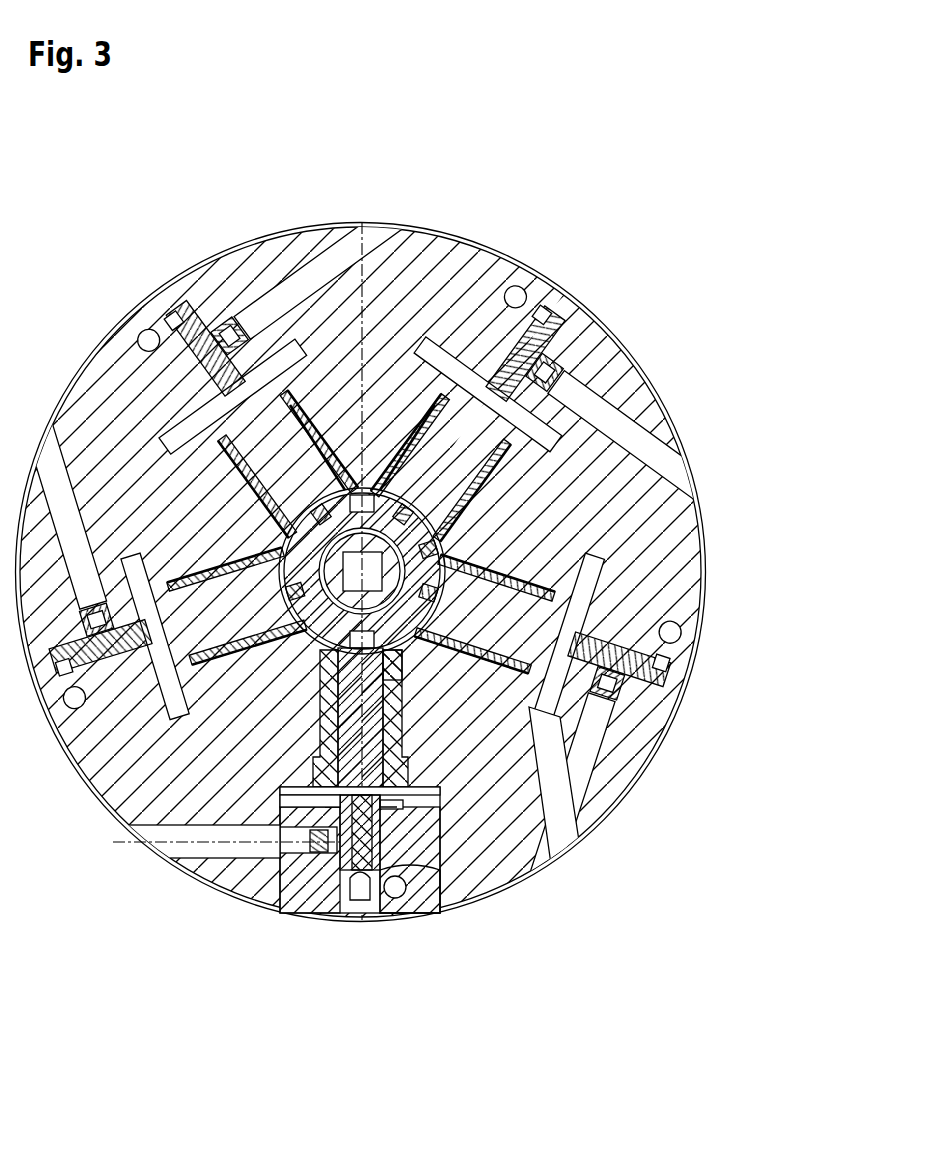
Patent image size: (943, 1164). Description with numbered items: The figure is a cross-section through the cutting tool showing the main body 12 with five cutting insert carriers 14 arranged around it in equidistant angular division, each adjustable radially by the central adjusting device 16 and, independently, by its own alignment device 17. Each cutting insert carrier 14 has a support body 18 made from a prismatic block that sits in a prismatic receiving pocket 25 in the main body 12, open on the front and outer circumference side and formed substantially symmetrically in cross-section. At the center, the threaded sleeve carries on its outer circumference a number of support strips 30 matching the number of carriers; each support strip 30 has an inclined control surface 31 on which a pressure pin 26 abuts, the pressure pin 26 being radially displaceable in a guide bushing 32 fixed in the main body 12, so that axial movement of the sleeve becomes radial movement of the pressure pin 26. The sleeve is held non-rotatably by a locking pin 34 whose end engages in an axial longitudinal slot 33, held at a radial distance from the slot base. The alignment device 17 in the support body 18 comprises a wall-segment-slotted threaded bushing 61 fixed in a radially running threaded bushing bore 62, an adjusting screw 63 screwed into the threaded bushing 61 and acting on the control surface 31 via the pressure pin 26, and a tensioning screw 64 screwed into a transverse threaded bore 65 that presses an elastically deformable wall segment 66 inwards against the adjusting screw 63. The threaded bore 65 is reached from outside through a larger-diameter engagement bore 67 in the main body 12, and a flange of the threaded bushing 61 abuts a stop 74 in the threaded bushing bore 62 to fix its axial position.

The main body 12 is at (636, 403).
The cutting insert carrier 14 is at (402, 852).
The central adjusting device 16 is at (458, 534).
The alignment device 17 is at (432, 835).
The support body 18 is at (548, 855).
The receiving pocket 25 is at (262, 893).
The pressure pin 26 is at (372, 710).
The support strip 30 is at (404, 660).
The control surface 31 is at (336, 683).
The guide bushing 32 is at (397, 750).
The longitudinal slot 33 is at (352, 488).
The locking pin 34 is at (382, 488).
The threaded bushing 61 is at (345, 880).
The threaded bushing bore 62 is at (363, 905).
The adjusting screw 63 is at (395, 905).
The tensioning screw 64 is at (330, 870).
The threaded bore 65 is at (277, 848).
The wall segment 66 is at (295, 838).
The engagement bore 67 is at (198, 847).
The stop 74 is at (432, 800).